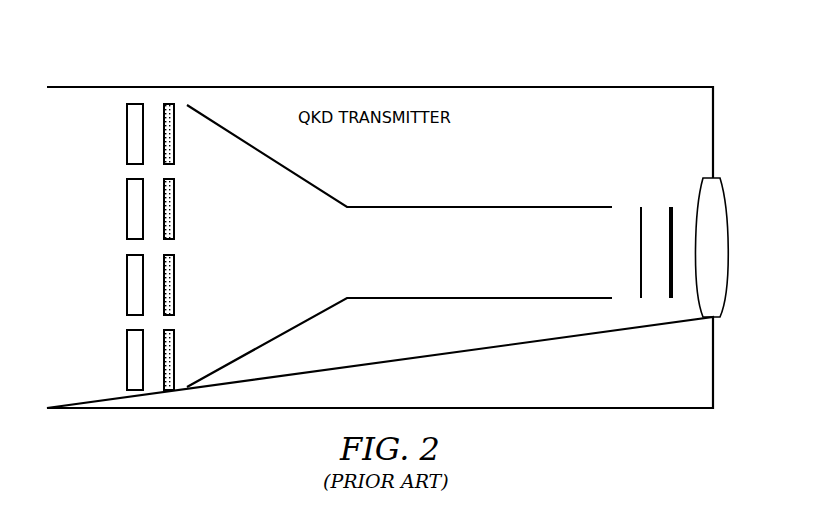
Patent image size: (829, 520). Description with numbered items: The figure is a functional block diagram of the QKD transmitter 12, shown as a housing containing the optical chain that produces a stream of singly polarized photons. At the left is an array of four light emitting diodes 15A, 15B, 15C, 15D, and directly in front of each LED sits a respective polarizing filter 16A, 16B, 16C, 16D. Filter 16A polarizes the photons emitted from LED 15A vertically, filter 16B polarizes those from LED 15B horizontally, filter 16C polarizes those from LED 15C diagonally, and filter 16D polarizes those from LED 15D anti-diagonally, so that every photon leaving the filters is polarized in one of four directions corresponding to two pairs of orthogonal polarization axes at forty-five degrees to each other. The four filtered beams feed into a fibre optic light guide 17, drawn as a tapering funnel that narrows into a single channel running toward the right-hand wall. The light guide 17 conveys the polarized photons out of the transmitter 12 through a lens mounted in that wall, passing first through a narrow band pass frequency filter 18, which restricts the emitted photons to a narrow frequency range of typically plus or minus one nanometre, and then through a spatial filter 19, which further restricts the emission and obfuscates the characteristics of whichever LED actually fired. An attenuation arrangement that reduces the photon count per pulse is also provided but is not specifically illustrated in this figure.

The QKD transmitter 12 is at (560, 66).
The light emitting diode 15A is at (127, 133).
The light emitting diode 15B is at (127, 208).
The light emitting diode 15C is at (127, 285).
The light emitting diode 15D is at (127, 362).
The polarizing filter 16A is at (174, 150).
The polarizing filter 16B is at (174, 213).
The polarizing filter 16C is at (174, 282).
The polarizing filter 16D is at (174, 347).
The fibre optic light guide 17 is at (480, 207).
The narrow band pass frequency filter 18 is at (641, 207).
The spatial filter 19 is at (669, 298).